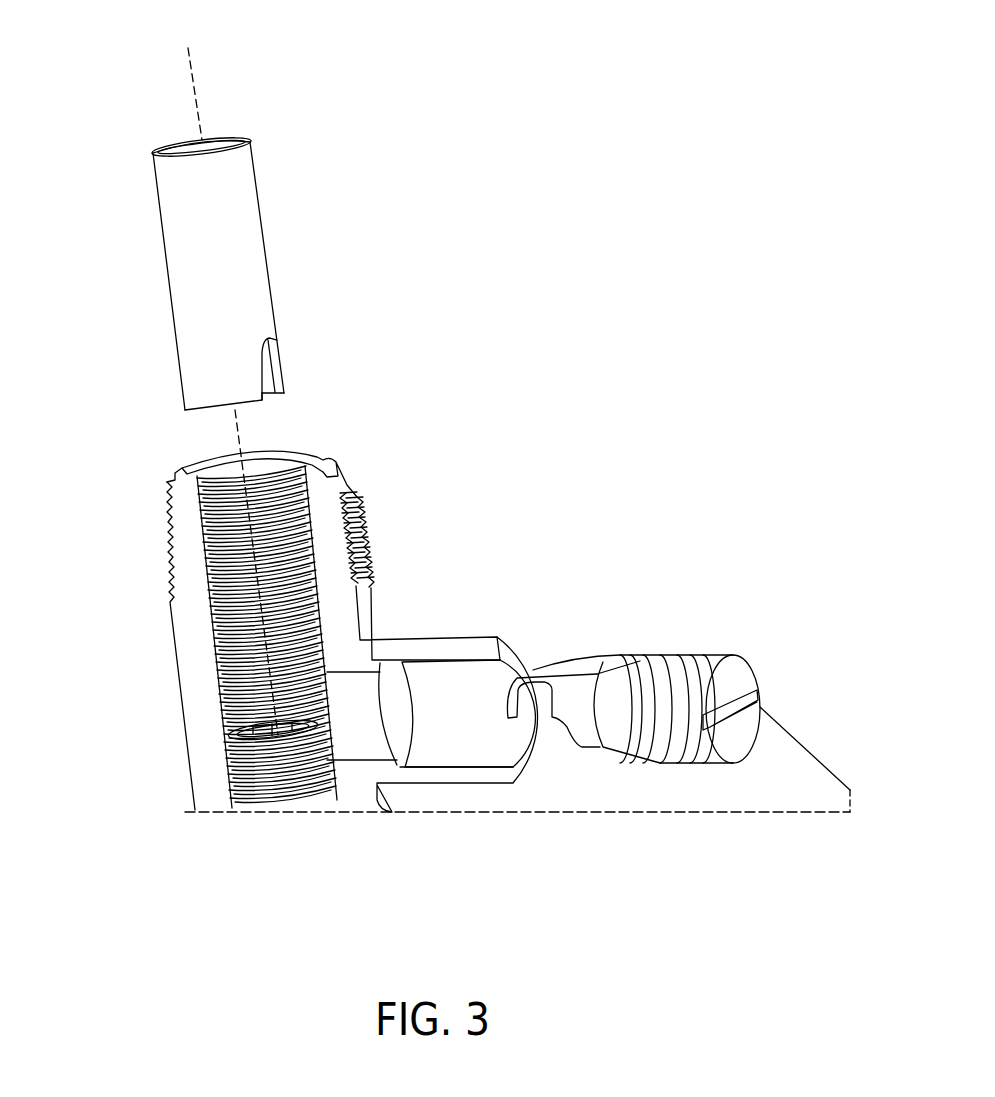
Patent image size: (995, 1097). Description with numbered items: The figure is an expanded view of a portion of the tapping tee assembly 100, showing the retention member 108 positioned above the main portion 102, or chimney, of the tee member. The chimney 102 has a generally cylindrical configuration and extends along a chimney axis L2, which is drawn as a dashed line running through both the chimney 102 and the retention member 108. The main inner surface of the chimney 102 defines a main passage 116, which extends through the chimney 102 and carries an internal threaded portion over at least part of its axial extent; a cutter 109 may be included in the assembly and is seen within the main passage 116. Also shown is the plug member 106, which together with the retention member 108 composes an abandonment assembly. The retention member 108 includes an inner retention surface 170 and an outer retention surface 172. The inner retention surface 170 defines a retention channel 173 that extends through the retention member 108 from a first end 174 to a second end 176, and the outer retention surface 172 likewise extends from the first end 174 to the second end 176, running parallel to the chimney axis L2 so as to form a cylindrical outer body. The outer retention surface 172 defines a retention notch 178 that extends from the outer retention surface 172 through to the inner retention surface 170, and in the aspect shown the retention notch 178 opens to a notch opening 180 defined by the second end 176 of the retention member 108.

The tapping tee assembly 100 is at (512, 330).
The main portion 102 is at (189, 661).
The plug member 106 is at (716, 656).
The retention member 108 is at (163, 285).
The cutter 109 is at (226, 733).
The main passage 116 is at (222, 572).
The inner retention surface 170 is at (188, 140).
The outer retention surface 172 is at (157, 208).
The retention channel 173 is at (221, 137).
The first end 174 is at (153, 151).
The second end 176 is at (184, 412).
The retention notch 178 is at (278, 362).
The notch opening 180 is at (272, 400).
The chimney axis L2 is at (195, 80).